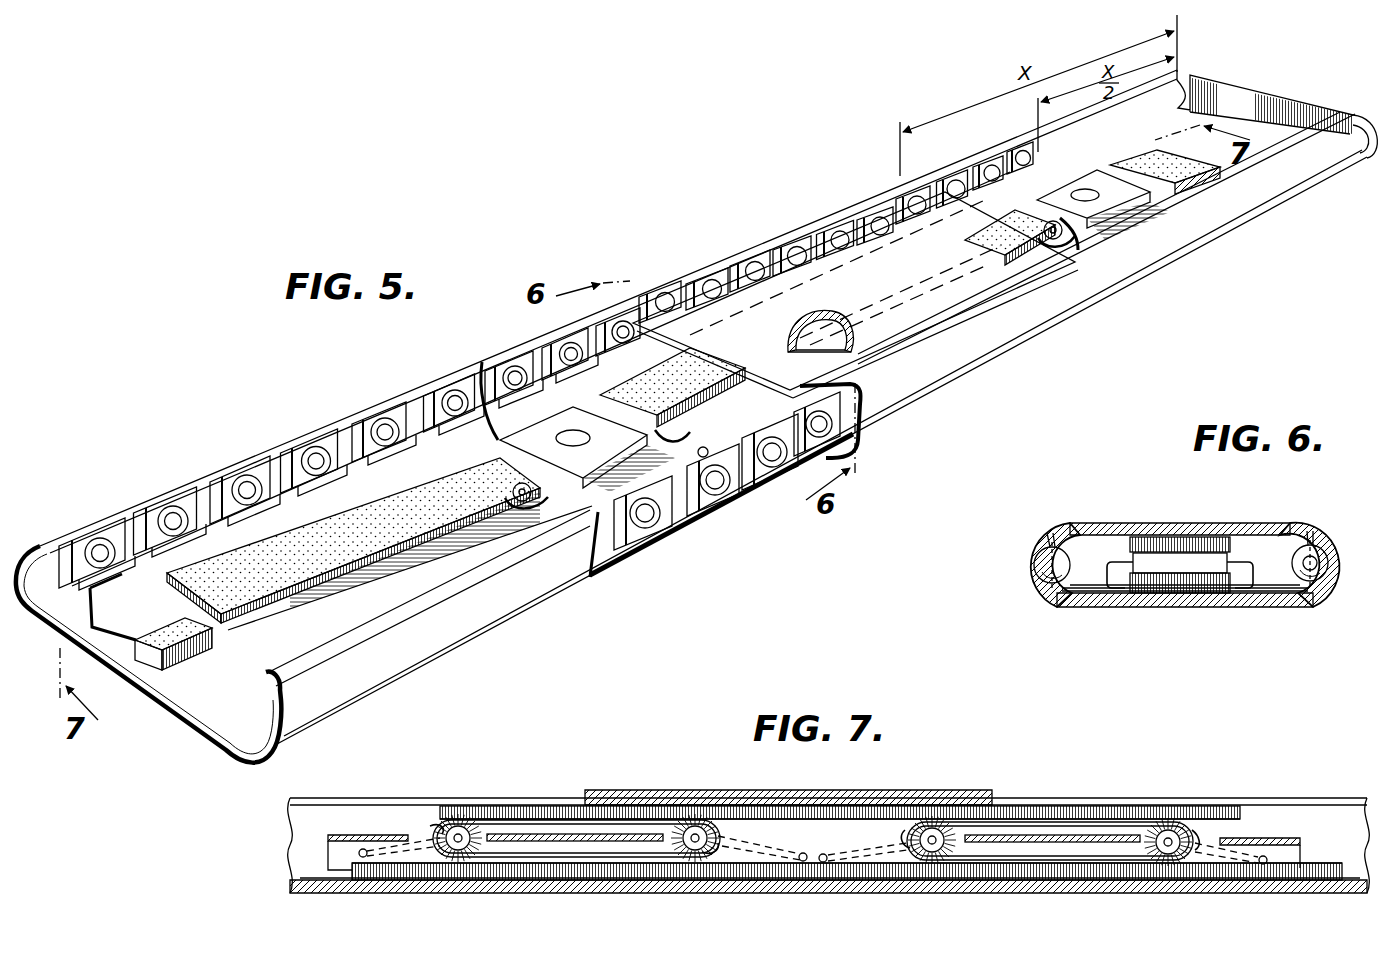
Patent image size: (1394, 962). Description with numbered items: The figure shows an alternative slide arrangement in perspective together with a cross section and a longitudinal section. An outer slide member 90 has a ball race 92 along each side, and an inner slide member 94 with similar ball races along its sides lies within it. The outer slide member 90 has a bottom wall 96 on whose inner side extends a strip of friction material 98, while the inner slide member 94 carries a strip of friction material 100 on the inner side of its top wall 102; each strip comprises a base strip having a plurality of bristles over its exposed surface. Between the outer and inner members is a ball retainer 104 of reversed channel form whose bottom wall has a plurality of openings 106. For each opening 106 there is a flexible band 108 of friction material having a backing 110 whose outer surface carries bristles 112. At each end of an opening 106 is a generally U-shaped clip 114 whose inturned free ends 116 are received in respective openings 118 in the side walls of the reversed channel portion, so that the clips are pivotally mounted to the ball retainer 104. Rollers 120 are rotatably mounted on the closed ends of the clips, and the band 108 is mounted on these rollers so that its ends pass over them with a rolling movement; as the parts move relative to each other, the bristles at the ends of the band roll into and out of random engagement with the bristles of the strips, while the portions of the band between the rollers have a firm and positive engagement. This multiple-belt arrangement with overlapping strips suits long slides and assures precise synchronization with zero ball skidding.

In FIG. 5, the outer slide member 90 is at (471, 640).
In FIG. 6, the outer slide member 90 is at (1046, 604).
In FIG. 5, the ball race 92 is at (44, 546).
In FIG. 6, the ball race 92 is at (1028, 566).
In FIG. 7, the ball race 92 is at (300, 830).
In FIG. 5, the inner slide member 94 is at (813, 266).
In FIG. 6, the inner slide member 94 is at (1158, 521).
In FIG. 7, the inner slide member 94 is at (850, 790).
In FIG. 5, the bottom wall 96 is at (212, 712).
In FIG. 6, the bottom wall 96 is at (1140, 600).
In FIG. 7, the bottom wall 96 is at (805, 882).
In FIG. 5, the strip of friction material 98 is at (166, 662).
In FIG. 6, the strip of friction material 98 is at (1172, 597).
In FIG. 7, the strip of friction material 98 is at (845, 893).
In FIG. 5, the strip of friction material 100 is at (840, 348).
In FIG. 6, the strip of friction material 100 is at (1190, 540).
In FIG. 7, the strip of friction material 100 is at (805, 777).
In FIG. 5, the top wall 102 is at (892, 326).
In FIG. 6, the top wall 102 is at (1220, 558).
In FIG. 7, the top wall 102 is at (742, 806).
In FIG. 5, the ball retainer 104 is at (1142, 208).
In FIG. 6, the ball retainer 104 is at (1092, 597).
In FIG. 7, the ball retainer 104 is at (1285, 830).
In FIG. 5, the openings 106 is at (485, 372).
In FIG. 7, the openings 106 is at (442, 832).
In FIG. 6, the flexible band 108 is at (1222, 582).
In FIG. 7, the flexible band 108 is at (525, 832).
In FIG. 7, the backing 110 is at (1030, 774).
In FIG. 5, the bristles 112 is at (265, 545).
In FIG. 7, the bristles 112 is at (1055, 806).
In FIG. 5, the clip 114 is at (556, 500).
In FIG. 6, the clip 114 is at (1118, 560).
In FIG. 7, the clip 114 is at (436, 838).
In FIG. 7, the free ends 116 is at (366, 860).
In FIG. 7, the openings 118 is at (358, 853).
In FIG. 5, the rollers 120 is at (520, 502).
In FIG. 6, the rollers 120 is at (1300, 556).
In FIG. 7, the rollers 120 is at (690, 828).